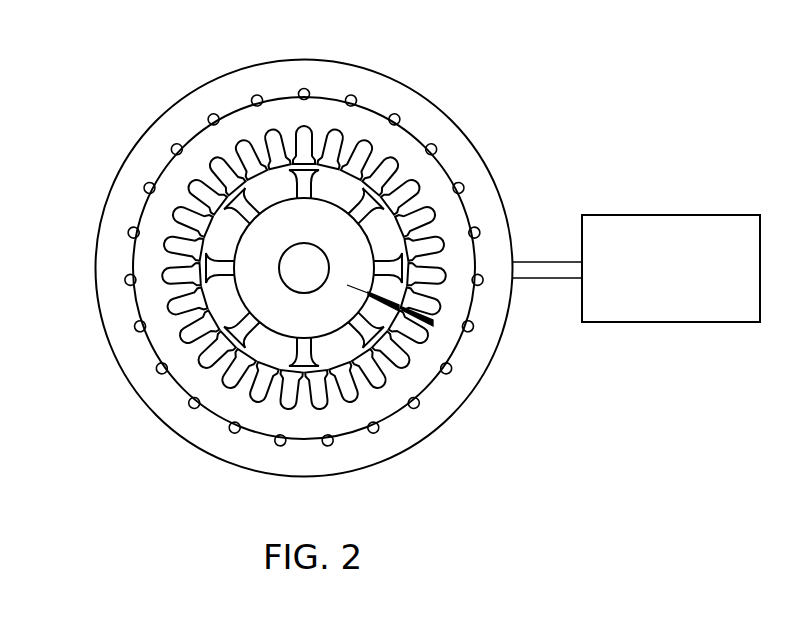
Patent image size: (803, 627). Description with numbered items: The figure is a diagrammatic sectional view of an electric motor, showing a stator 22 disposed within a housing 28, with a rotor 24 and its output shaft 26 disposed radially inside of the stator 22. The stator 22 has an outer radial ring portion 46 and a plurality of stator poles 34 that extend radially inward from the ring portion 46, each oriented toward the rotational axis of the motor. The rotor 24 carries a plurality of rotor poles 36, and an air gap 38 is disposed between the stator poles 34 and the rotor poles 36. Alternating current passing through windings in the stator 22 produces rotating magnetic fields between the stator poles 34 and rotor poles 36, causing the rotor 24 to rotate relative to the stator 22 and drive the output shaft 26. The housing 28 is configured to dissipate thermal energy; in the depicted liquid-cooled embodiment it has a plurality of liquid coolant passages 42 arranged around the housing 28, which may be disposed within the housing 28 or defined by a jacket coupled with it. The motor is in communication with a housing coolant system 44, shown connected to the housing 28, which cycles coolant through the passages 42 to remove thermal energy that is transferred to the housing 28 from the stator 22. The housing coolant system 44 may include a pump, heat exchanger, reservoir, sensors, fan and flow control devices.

The stator 22 is at (202, 416).
The rotor 24 is at (320, 227).
The output shaft 26 is at (320, 279).
The housing 28 is at (442, 100).
The stator poles 34 is at (198, 284).
The rotor poles 36 is at (370, 229).
The air gap 38 is at (433, 323).
The liquid coolant passages 42 is at (261, 94).
The housing coolant system 44 is at (655, 309).
The outer radial ring portion 46 is at (325, 115).